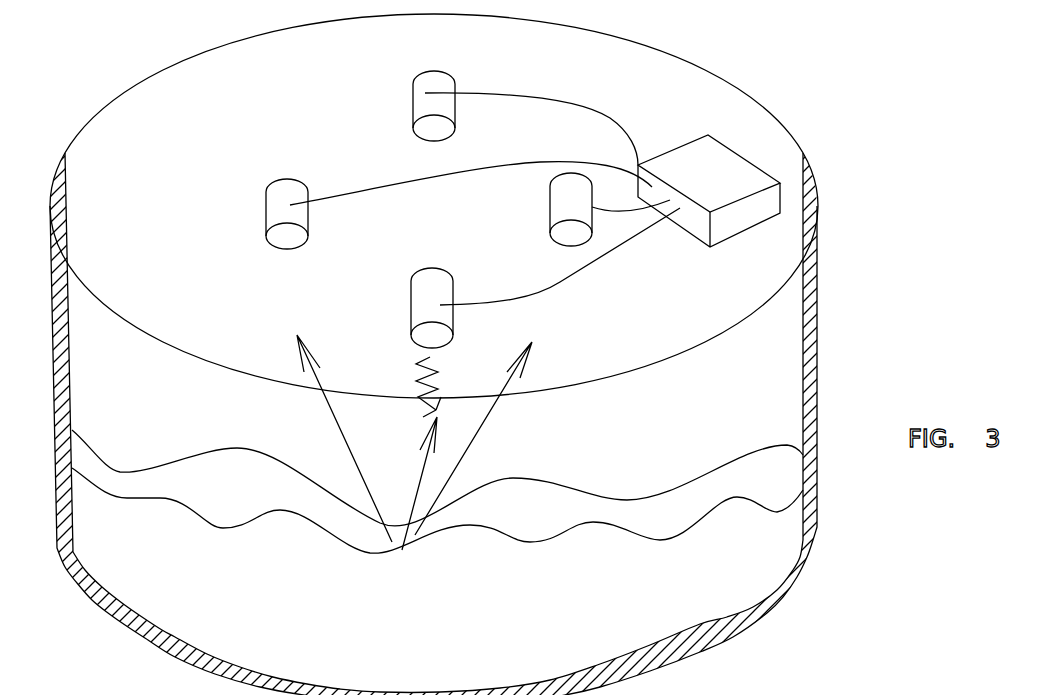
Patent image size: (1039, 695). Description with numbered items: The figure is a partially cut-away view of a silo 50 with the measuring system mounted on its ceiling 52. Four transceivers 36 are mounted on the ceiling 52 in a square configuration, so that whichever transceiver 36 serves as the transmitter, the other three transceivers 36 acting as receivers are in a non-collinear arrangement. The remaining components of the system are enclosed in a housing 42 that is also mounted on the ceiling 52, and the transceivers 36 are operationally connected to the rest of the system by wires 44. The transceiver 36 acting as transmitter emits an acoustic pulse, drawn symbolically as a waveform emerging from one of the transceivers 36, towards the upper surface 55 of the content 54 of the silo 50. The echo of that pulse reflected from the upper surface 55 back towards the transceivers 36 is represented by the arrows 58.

The transceiver 36 is at (567, 180).
The housing 42 is at (716, 191).
The wires 44 is at (555, 98).
The silo 50 is at (817, 265).
The ceiling 52 is at (379, 65).
The content 54 is at (426, 643).
The upper surface 55 is at (511, 521).
The arrows 58 is at (337, 418).